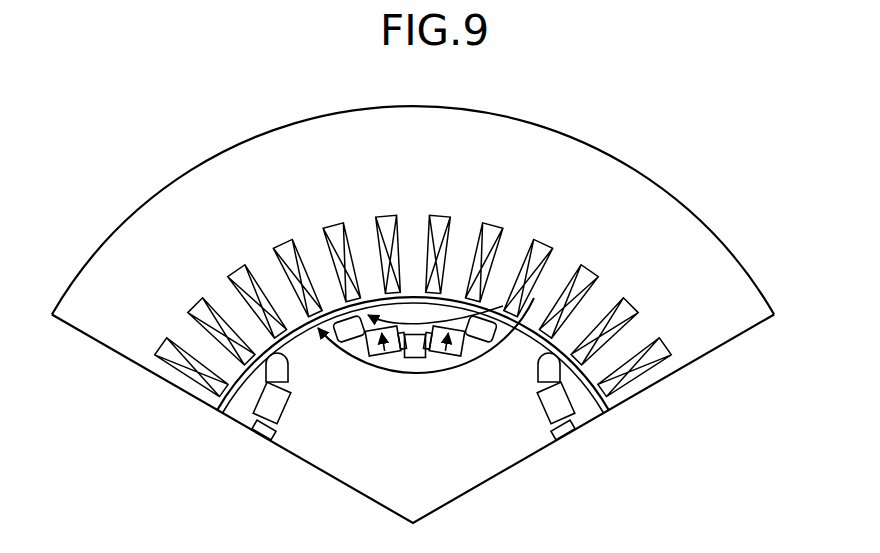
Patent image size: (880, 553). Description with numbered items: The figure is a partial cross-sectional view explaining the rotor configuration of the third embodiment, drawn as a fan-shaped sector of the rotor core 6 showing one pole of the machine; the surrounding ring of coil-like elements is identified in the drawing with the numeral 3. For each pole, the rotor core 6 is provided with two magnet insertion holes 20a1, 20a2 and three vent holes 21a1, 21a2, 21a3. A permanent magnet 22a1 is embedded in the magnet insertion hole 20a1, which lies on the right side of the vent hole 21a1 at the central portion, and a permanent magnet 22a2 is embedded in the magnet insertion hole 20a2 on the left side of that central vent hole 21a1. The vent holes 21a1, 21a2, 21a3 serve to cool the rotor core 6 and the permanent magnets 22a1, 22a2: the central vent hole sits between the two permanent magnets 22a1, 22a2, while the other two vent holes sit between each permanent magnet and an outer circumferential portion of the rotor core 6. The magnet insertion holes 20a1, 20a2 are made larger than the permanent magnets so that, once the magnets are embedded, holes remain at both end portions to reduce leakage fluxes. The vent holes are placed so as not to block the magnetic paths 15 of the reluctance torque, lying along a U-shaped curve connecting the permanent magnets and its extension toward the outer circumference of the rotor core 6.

The stator 3 is at (612, 176).
The rotor core 6 is at (373, 480).
The magnetic paths 15 is at (606, 389).
The vent hole 21a1 is at (419, 358).
The vent hole 21a2 is at (486, 342).
The vent hole 21a3 is at (345, 341).
The permanent magnet 22a1 is at (455, 354).
The permanent magnet 22a2 is at (381, 354).
The magnet insertion hole 20a1 is at (453, 371).
The magnet insertion hole 20a2 is at (391, 371).